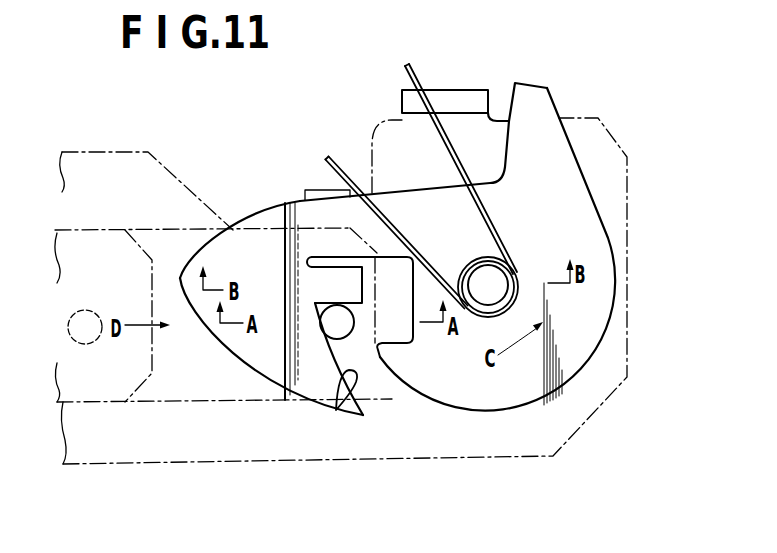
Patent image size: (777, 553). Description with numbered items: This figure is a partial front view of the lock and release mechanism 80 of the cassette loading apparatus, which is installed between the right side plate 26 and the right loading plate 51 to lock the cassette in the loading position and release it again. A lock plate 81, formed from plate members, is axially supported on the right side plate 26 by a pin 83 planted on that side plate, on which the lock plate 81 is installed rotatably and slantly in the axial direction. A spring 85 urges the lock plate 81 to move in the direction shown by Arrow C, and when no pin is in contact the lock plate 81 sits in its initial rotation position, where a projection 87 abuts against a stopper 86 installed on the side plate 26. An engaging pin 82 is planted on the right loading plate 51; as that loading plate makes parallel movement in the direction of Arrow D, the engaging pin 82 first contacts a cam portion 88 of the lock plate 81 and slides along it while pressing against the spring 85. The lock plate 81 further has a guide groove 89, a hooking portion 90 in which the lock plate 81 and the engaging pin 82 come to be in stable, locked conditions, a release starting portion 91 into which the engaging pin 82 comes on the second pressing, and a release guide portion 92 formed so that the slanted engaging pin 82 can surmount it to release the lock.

The right side plate 26 is at (90, 144).
The right loading plate 51 is at (147, 230).
The engaging pin 82 is at (68, 320).
The cam portion 88 is at (217, 347).
The hooking portion 90 is at (320, 318).
The release guide portion 92 is at (333, 280).
The release starting portion 91 is at (403, 267).
The lock and release mechanism 80 is at (397, 405).
The lock plate 81 is at (588, 380).
The stopper 86 is at (453, 98).
The projection 87 is at (505, 97).
The spring 85 is at (478, 195).
The pin 83 is at (492, 282).
The guide groove 89 is at (338, 410).